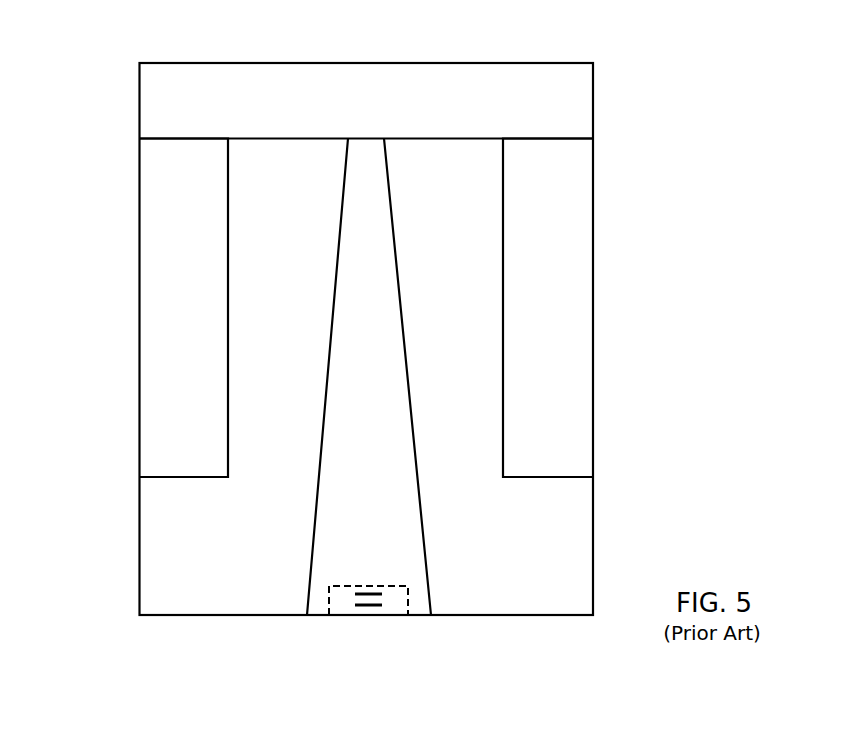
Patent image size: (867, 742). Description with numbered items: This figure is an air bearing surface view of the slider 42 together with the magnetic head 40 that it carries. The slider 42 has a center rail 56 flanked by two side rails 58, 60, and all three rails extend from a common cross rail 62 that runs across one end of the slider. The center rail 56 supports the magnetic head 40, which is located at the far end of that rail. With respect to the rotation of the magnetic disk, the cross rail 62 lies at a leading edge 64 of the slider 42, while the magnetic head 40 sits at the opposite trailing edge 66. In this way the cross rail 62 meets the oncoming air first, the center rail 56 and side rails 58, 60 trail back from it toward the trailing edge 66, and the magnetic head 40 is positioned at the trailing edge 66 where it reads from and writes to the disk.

The magnetic head 40 is at (342, 610).
The slider 42 is at (139, 558).
The center rail 56 is at (340, 308).
The side rail 58 is at (150, 272).
The side rail 60 is at (585, 272).
The cross rail 62 is at (284, 63).
The leading edge 64 is at (467, 63).
The trailing edge 66 is at (514, 615).